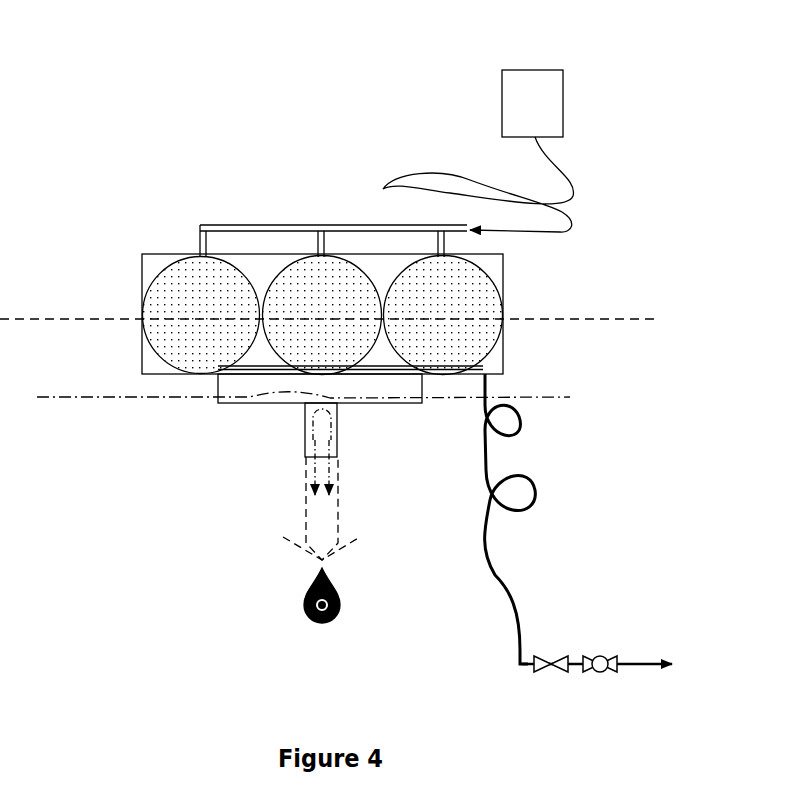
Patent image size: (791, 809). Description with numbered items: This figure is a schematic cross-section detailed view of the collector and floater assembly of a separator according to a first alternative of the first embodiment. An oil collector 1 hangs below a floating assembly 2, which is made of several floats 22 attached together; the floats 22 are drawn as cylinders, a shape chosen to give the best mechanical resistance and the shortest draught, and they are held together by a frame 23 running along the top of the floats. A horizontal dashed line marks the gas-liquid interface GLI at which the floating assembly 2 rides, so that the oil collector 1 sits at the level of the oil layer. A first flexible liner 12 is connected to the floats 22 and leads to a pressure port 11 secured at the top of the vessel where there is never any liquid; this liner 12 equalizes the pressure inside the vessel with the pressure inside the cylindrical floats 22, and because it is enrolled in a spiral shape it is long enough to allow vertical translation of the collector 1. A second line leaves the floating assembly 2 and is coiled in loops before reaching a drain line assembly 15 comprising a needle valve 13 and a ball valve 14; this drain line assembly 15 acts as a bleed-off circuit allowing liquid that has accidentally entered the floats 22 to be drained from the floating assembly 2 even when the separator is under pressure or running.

The oil collector 1 is at (288, 404).
The floating assembly 2 is at (145, 250).
The pressure port 11 is at (512, 80).
The first flexible liner 12 is at (393, 178).
The needle valve 13 is at (553, 655).
The ball valve 14 is at (604, 652).
The drain line assembly 15 is at (617, 683).
The floats 22 is at (152, 347).
The manifold frame 23 is at (205, 225).
The gas-liquid interface GLI is at (641, 320).